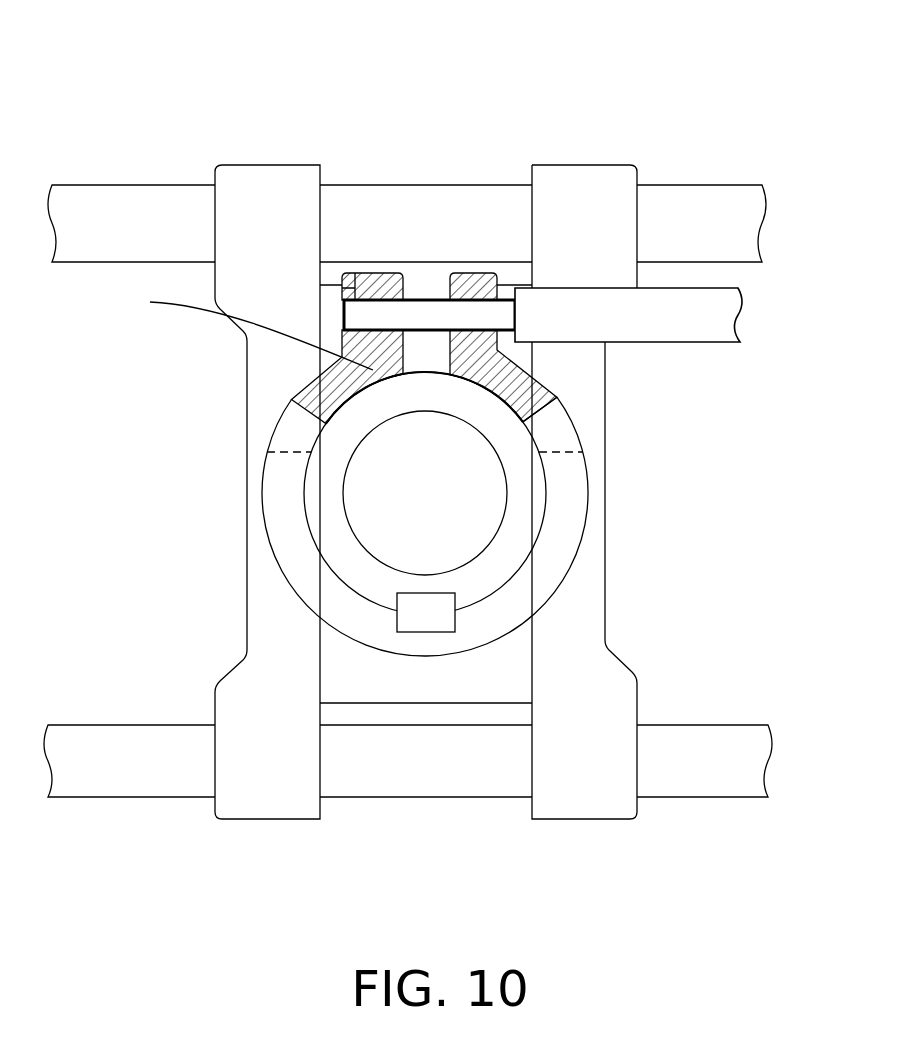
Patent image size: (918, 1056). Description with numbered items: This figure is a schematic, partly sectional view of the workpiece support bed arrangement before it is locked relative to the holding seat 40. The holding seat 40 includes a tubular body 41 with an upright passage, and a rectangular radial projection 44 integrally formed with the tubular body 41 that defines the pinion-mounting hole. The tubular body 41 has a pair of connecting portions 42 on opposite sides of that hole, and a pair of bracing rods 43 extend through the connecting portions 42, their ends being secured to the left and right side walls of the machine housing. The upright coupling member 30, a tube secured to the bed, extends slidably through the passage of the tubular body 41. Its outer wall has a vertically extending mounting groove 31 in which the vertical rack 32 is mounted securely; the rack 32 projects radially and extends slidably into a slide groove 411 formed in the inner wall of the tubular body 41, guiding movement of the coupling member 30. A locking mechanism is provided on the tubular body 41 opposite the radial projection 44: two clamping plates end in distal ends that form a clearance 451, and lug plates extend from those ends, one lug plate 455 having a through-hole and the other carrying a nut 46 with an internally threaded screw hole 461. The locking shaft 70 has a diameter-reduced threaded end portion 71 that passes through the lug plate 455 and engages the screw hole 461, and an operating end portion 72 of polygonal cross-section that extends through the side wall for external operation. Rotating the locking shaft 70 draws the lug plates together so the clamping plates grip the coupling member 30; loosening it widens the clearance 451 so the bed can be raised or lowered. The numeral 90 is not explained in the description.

The coupling member 30 is at (296, 509).
The mounting groove 31 is at (397, 593).
The vertical rack 32 is at (397, 615).
The holding seat 40 is at (262, 436).
The tubular body 41 is at (370, 397).
The slide groove 411 is at (420, 632).
The connecting portions 42 is at (253, 167).
The bracing rods 43 is at (725, 193).
The radial projection 44 is at (503, 675).
The clearance 451 is at (555, 408).
The lug plate 455 is at (479, 278).
The nut 46 is at (360, 273).
The screw hole 461 is at (390, 273).
The locking shaft 70 is at (728, 350).
The threaded end portion 71 is at (427, 298).
The operating end portion 72 is at (665, 297).
The seal ring 90 is at (245, 328).